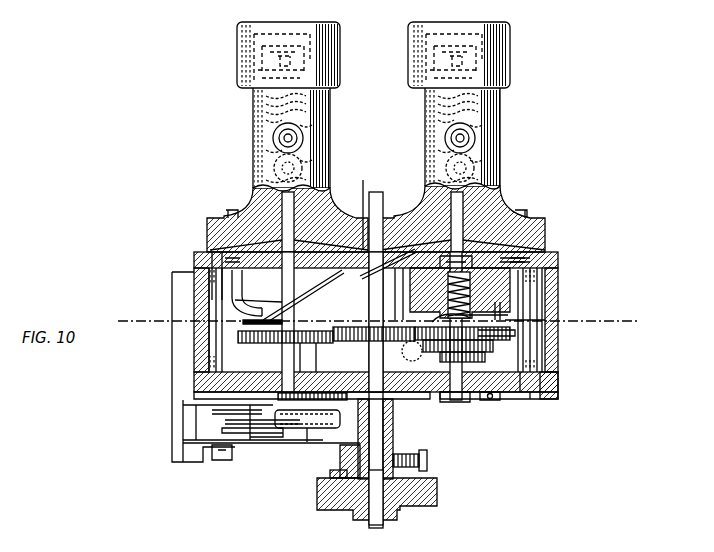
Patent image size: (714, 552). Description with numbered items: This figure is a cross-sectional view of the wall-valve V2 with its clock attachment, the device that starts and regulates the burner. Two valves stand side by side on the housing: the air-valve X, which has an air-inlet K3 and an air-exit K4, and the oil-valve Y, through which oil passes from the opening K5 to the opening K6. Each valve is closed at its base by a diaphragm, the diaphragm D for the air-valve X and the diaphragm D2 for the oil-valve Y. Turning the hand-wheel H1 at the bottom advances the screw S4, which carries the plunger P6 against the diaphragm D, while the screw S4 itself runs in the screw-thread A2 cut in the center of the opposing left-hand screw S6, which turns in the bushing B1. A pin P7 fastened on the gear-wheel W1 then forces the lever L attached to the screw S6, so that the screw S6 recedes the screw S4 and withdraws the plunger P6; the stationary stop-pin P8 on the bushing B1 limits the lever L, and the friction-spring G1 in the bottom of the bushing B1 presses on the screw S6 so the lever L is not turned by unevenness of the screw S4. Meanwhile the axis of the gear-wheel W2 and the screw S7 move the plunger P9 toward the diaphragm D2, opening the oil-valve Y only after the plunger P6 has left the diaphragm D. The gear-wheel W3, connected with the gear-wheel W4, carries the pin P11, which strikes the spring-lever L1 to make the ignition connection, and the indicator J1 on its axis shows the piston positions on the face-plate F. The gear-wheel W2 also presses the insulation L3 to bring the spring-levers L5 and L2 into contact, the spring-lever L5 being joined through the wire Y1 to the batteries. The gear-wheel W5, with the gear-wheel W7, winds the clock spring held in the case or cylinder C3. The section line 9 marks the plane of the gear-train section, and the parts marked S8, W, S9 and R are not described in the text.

The oil-valve Y is at (253, 103).
The opening K5 is at (302, 134).
The opening K6 is at (298, 168).
The wire Y1 is at (372, 344).
The air-valve X is at (500, 108).
The air-inlet K3 is at (475, 134).
The air-exit K4 is at (472, 166).
The diaphragm D2 is at (232, 238).
The diaphragm D is at (515, 232).
The plunger P9 is at (200, 260).
The section line 9 is at (374, 323).
The spring-lever L2 is at (235, 300).
The spring-lever L5 is at (243, 320).
The insulation L3 is at (263, 321).
The spring hook S8 is at (250, 293).
The screw S6 is at (380, 292).
The plunger P6 is at (425, 275).
The screw S4 is at (432, 318).
The gear-wheel W2 is at (272, 343).
The gear wheel W is at (362, 342).
The screw S7 is at (300, 372).
The gear-wheel W1 is at (510, 338).
The gear-wheel W4 is at (493, 348).
The gear-wheel W3 is at (490, 360).
The friction-spring G1 is at (558, 265).
The bushing B1 is at (558, 278).
The screw-thread A2 is at (560, 300).
The stop-pin P8 is at (505, 316).
The lever L is at (545, 322).
The pin P7 is at (515, 330).
The pin P11 is at (488, 394).
The face-plate F is at (550, 396).
The spring-lever L1 is at (530, 386).
The indicator J1 is at (462, 402).
The gear-wheel W5 is at (394, 405).
The screw S9 is at (428, 462).
The hand-wheel H1 is at (317, 505).
The case or cylinder C3 is at (312, 428).
The gear-wheel W7 is at (282, 402).
The bracket R is at (172, 456).
The wall-valve V2 is at (530, 396).